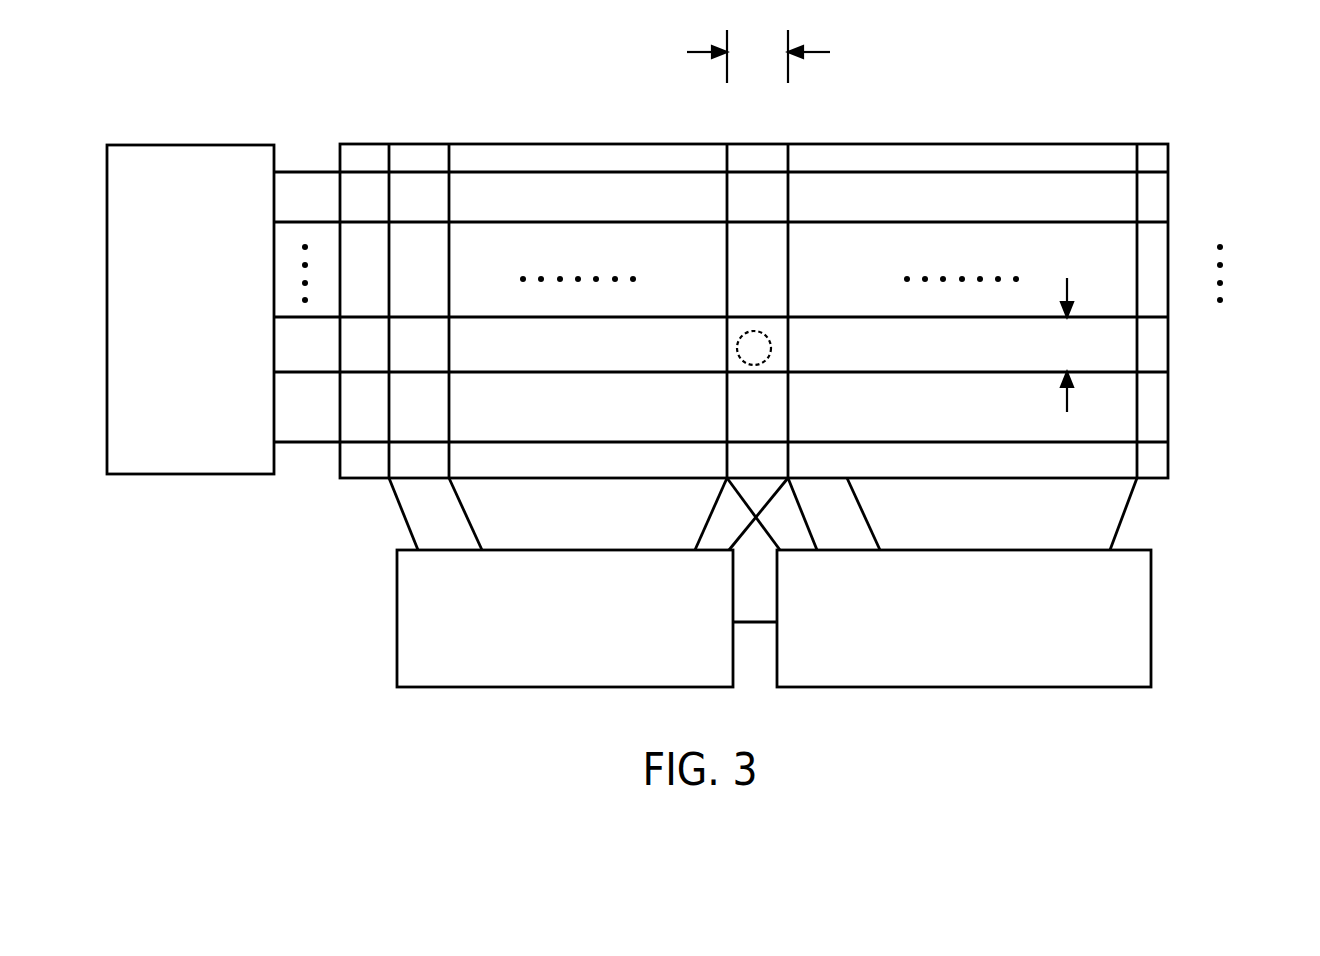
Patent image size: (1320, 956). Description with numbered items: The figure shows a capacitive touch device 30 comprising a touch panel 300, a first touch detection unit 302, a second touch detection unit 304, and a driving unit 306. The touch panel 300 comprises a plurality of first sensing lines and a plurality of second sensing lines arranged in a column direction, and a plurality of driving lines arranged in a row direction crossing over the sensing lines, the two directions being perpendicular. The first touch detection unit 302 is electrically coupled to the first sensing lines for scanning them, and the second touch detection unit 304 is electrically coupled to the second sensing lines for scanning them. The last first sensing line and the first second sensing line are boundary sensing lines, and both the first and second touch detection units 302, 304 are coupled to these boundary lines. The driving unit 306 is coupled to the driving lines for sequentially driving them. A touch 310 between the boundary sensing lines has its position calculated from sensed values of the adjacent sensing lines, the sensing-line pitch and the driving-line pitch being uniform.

The capacitive touch device 30 is at (1262, 53).
The touch panel 300 is at (908, 143).
The first touch detection unit 302 is at (557, 688).
The second touch detection unit 304 is at (980, 688).
The driving unit 306 is at (226, 476).
The touch 310 is at (738, 338).